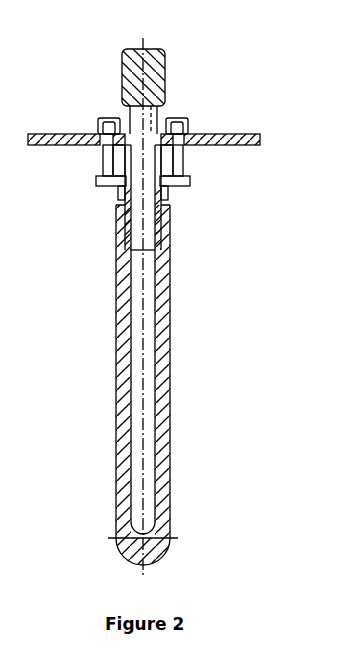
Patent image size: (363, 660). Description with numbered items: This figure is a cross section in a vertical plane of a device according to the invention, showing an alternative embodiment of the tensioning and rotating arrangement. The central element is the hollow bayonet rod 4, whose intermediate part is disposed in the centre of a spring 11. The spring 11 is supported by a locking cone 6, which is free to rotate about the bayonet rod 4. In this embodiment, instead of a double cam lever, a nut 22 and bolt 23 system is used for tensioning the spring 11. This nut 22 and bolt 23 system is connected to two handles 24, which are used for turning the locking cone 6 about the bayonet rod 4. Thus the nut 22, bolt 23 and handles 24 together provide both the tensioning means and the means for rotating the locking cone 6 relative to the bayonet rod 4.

The hollow bayonet rod 4 is at (166, 252).
The locking cone 6 is at (170, 197).
The spring 11 is at (192, 190).
The nut 22 is at (189, 129).
The bolt 23 is at (183, 157).
The handles 24 is at (261, 143).